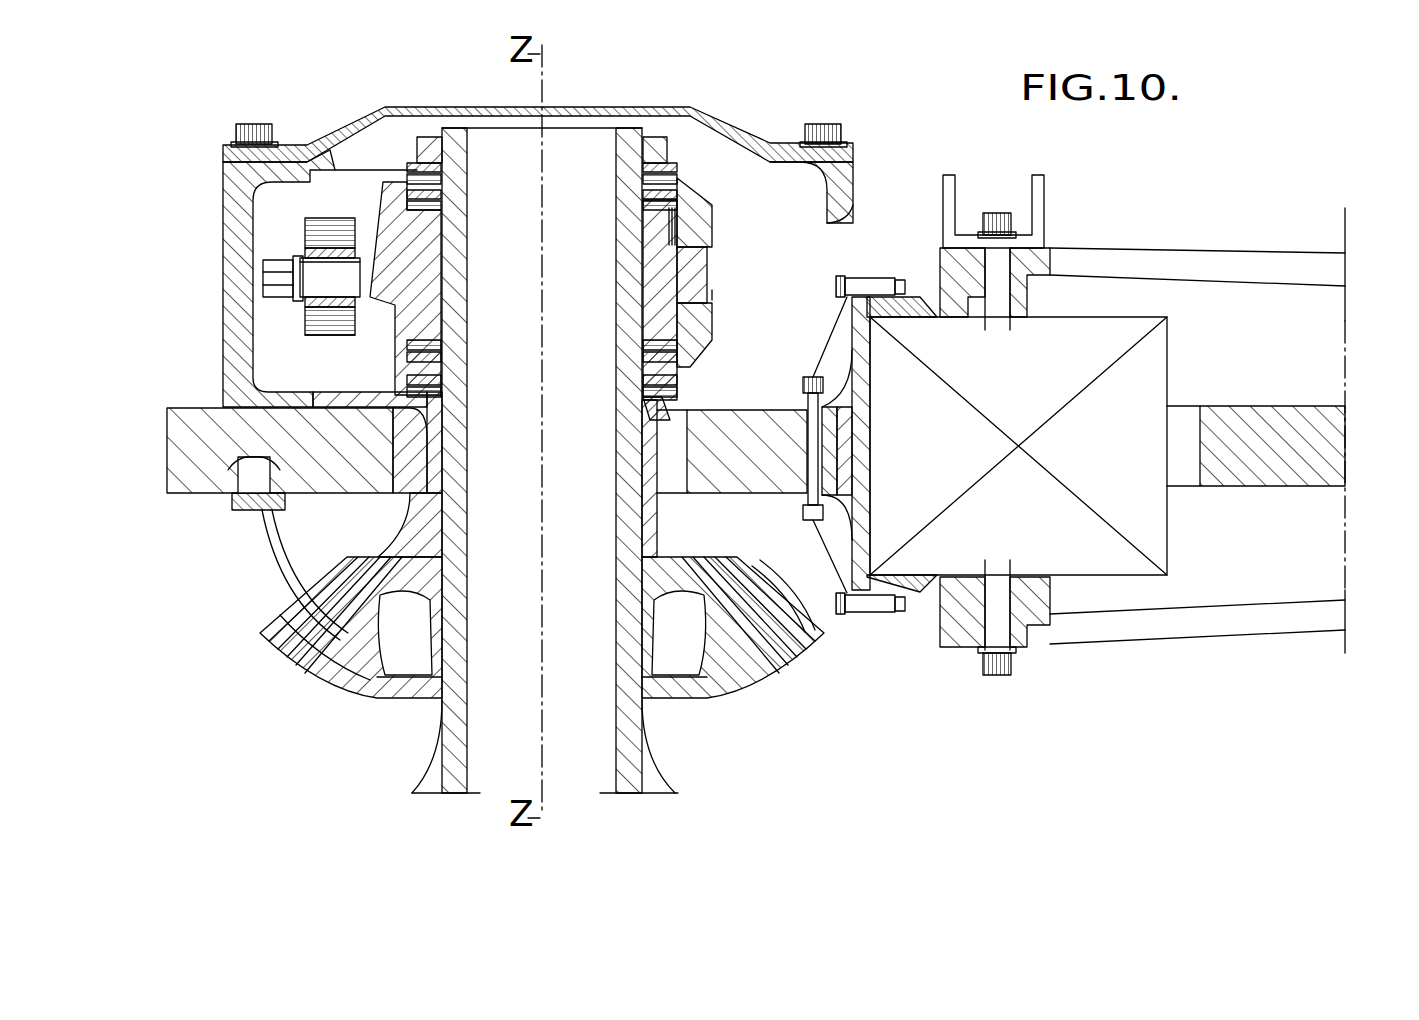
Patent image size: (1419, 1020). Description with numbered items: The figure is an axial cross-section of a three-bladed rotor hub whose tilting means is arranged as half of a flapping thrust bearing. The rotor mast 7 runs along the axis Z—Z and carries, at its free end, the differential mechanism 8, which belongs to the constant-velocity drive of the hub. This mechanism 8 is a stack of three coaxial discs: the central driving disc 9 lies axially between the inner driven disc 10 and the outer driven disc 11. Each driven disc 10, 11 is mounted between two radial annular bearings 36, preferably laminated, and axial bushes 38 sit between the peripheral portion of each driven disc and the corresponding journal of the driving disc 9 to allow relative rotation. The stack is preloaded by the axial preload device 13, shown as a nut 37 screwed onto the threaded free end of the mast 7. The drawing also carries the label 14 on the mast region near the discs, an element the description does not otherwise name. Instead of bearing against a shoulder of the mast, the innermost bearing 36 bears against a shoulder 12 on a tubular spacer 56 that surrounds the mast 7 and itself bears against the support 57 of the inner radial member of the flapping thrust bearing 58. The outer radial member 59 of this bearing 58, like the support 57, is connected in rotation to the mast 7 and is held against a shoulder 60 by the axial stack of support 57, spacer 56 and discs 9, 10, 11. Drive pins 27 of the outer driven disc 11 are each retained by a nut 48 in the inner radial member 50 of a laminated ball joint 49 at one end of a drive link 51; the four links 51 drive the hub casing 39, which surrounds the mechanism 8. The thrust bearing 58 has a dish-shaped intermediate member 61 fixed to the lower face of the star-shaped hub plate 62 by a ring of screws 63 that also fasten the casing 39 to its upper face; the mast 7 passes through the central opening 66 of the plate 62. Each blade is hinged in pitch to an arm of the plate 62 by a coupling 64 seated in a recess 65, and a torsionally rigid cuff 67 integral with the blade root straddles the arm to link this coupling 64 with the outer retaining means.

The rotor mast 7 is at (632, 758).
The differential mechanism 8 is at (724, 292).
The central disc 9 is at (690, 270).
The inner driven disc 10 is at (700, 340).
The outer driven disc 11 is at (700, 215).
The shoulder 12 is at (650, 402).
The axial preload device 13 is at (676, 145).
The shaft tube 14 is at (628, 262).
The drive pins of the outer driven disc 27 is at (372, 292).
The radial annular bearings 36 is at (674, 186).
The nut 37 is at (652, 135).
The axial bushes 38 is at (673, 222).
The hub casing 39 is at (232, 368).
The nut 48 is at (278, 280).
The laminated ball joint 49 is at (333, 212).
The inner radial member 50 is at (300, 262).
The drive links 51 is at (325, 336).
The tubular spacer 56 is at (656, 468).
The inner radial member support 57 is at (672, 560).
The flapping thrust bearing 58 is at (278, 612).
The outer radial member 59 is at (772, 655).
The shoulder 60 is at (428, 708).
The dish-shaped intermediate member 61 is at (335, 625).
The hub plate 62 is at (205, 470).
The screws 63 is at (262, 125).
The coupling 64 is at (1052, 540).
The recess 65 is at (1200, 456).
The central opening 66 is at (408, 478).
The cuff 67 is at (1250, 252).